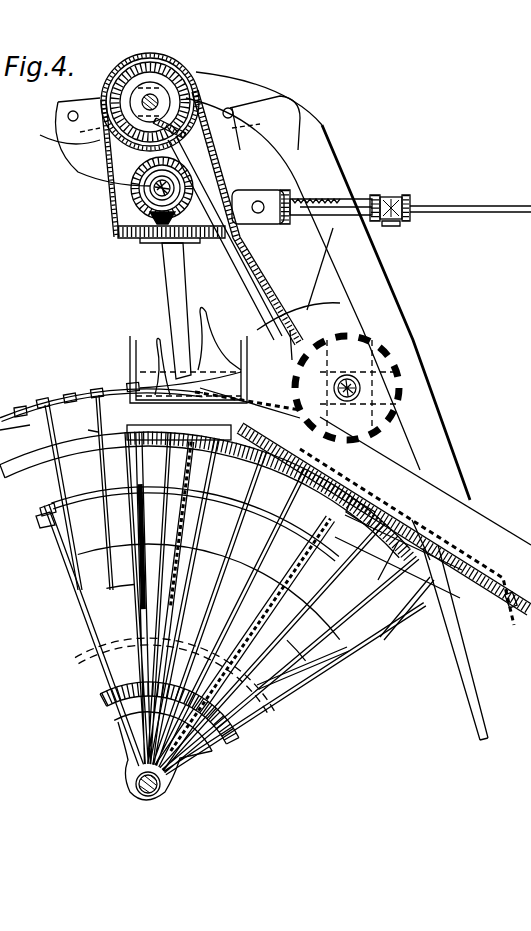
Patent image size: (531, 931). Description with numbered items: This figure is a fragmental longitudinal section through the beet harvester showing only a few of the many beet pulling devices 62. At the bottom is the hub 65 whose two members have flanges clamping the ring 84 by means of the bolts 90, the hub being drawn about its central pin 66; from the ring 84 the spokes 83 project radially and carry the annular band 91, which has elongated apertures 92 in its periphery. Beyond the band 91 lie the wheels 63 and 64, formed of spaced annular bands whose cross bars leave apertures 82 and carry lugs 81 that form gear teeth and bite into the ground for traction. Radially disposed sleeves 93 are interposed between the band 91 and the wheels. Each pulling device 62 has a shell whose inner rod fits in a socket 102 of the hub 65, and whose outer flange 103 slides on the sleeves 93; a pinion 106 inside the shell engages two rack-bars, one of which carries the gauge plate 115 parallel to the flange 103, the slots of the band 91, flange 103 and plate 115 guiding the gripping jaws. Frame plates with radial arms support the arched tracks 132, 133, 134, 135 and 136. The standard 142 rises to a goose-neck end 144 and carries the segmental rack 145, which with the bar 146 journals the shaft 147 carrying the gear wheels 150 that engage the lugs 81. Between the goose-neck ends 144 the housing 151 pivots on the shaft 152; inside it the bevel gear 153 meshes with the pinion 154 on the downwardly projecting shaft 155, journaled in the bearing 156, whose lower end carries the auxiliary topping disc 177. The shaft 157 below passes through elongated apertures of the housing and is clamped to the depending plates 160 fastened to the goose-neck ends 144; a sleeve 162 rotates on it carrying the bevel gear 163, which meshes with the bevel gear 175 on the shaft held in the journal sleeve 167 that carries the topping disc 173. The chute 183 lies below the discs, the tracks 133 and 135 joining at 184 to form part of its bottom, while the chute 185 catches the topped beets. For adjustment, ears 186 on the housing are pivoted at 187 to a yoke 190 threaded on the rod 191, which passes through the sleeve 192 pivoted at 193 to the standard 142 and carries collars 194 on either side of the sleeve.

The housing 151 is at (100, 88).
The shaft 152 is at (185, 118).
The bevel gear 153 is at (172, 60).
The pinion 154 is at (238, 108).
The downwardly projecting shaft 155 is at (254, 252).
The bearing 156 is at (246, 230).
The shaft 157 is at (140, 200).
The depending plates 160 is at (92, 150).
The sleeve 162 is at (150, 190).
The bevel gear 163 is at (52, 133).
The journal sleeve 167 is at (168, 282).
The bevel gear 175 is at (130, 236).
The auxiliary dish shaped topping disc 177 is at (272, 345).
The chute 183 is at (468, 500).
The junction of tracks 184 is at (220, 452).
The chute 185 is at (128, 342).
The ears 186 is at (278, 168).
The pivot 187 is at (300, 200).
The yoke 190 is at (345, 195).
The rod 191 is at (390, 196).
The sleeve 192 is at (408, 196).
The pivot 193 is at (400, 226).
The collars 194 is at (412, 204).
The standard 142 is at (428, 412).
The goose-neck ends 144 is at (288, 128).
The bar 146 is at (398, 366).
The shaft 147 is at (362, 388).
The gear wheels 150 is at (368, 352).
The arched track 135 is at (455, 646).
The arched track 134 is at (430, 580).
The beet pulling device 62 is at (142, 516).
The wheel 63 is at (66, 394).
The wheel 64 is at (15, 398).
The hub 65 is at (128, 770).
The pivot pin 66 is at (160, 784).
The lug 81 is at (46, 398).
The apertures 82 is at (60, 394).
The spokes 83 is at (74, 604).
The ring 84 is at (270, 726).
The bolts 90 is at (122, 722).
The annular band 91 is at (44, 504).
The elongated apertures 92 is at (60, 520).
The sleeve 93 is at (52, 428).
The socket 102 is at (118, 722).
The flange 103 is at (138, 440).
The pinion 106 is at (130, 520).
The gauge plate 115 is at (82, 422).
The arched track 132 is at (60, 558).
The arched track 133 is at (60, 470).
The arched track 136 is at (92, 648).
The segmental rack 145 is at (13, 383).
The dish shaped topping disc 173 is at (116, 388).